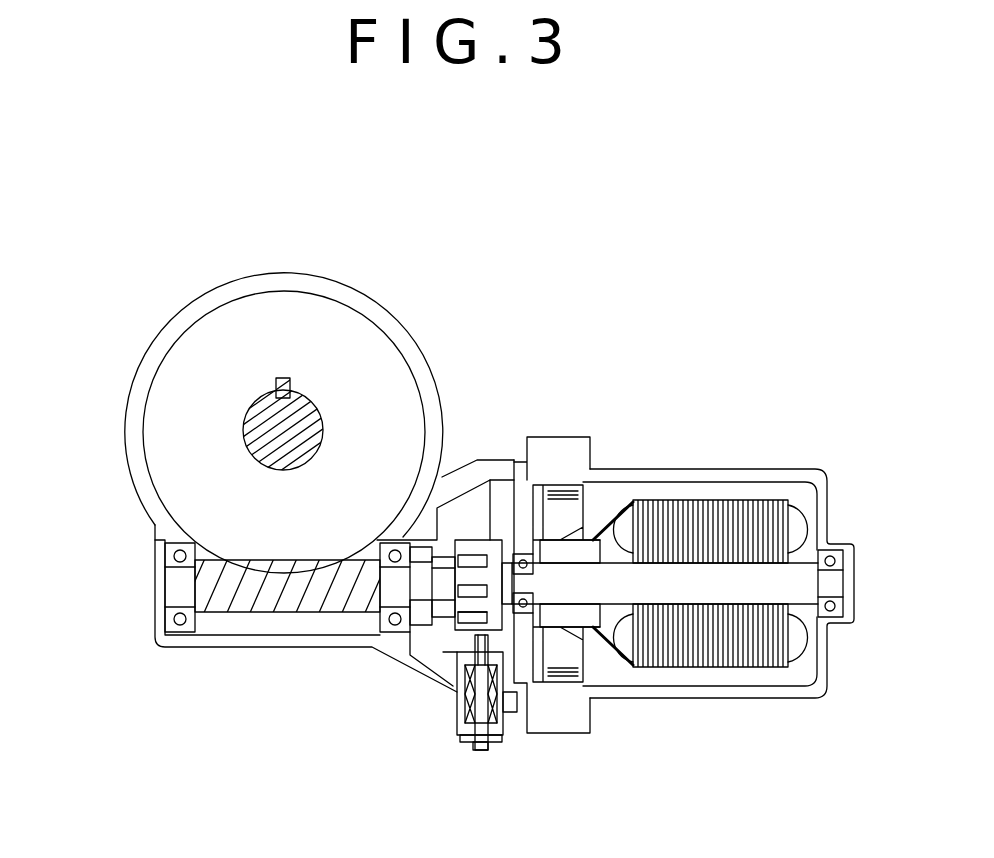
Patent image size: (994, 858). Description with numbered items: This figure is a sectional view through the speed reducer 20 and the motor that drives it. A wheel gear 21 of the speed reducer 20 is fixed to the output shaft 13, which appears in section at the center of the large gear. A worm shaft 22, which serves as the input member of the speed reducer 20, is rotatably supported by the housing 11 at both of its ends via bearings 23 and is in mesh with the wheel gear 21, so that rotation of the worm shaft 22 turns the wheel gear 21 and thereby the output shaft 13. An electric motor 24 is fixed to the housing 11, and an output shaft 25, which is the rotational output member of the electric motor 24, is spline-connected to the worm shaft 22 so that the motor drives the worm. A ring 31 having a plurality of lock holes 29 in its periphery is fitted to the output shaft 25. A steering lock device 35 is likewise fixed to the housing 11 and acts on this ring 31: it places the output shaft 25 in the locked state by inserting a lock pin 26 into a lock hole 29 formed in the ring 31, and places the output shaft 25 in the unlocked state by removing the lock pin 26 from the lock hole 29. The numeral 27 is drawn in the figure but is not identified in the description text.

The housing 11 is at (441, 405).
The output shaft 13 is at (243, 432).
The speed reducer 20 is at (147, 530).
The wheel gear 21 is at (227, 348).
The worm shaft 22 is at (253, 598).
The bearings 23 is at (442, 477).
The electric motor 24 is at (673, 470).
The output shaft 25 is at (443, 562).
The lock pin 26 is at (460, 647).
The rotation sensor 27 is at (455, 722).
The lock holes 29 is at (462, 620).
The ring 31 is at (495, 607).
The steering lock device 35 is at (519, 747).